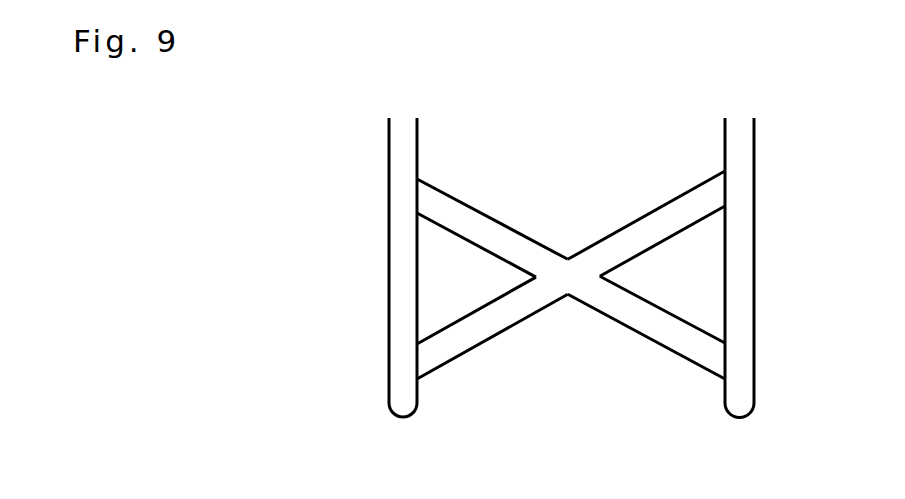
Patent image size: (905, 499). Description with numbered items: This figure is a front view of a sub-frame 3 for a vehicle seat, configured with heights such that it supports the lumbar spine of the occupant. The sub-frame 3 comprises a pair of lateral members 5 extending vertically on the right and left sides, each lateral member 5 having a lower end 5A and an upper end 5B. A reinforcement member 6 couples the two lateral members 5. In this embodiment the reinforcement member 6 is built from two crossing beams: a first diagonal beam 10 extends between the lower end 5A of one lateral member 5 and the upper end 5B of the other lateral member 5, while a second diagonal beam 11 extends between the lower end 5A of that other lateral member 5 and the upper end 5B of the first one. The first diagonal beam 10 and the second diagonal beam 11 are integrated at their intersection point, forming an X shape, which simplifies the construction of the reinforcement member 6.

The sub-frame 3 is at (552, 318).
The lateral member 5 is at (397, 245).
The lower end 5A is at (386, 407).
The upper end 5B is at (388, 150).
The reinforcement member 6 is at (508, 223).
The first diagonal beam 10 is at (643, 235).
The second diagonal beam 11 is at (650, 335).